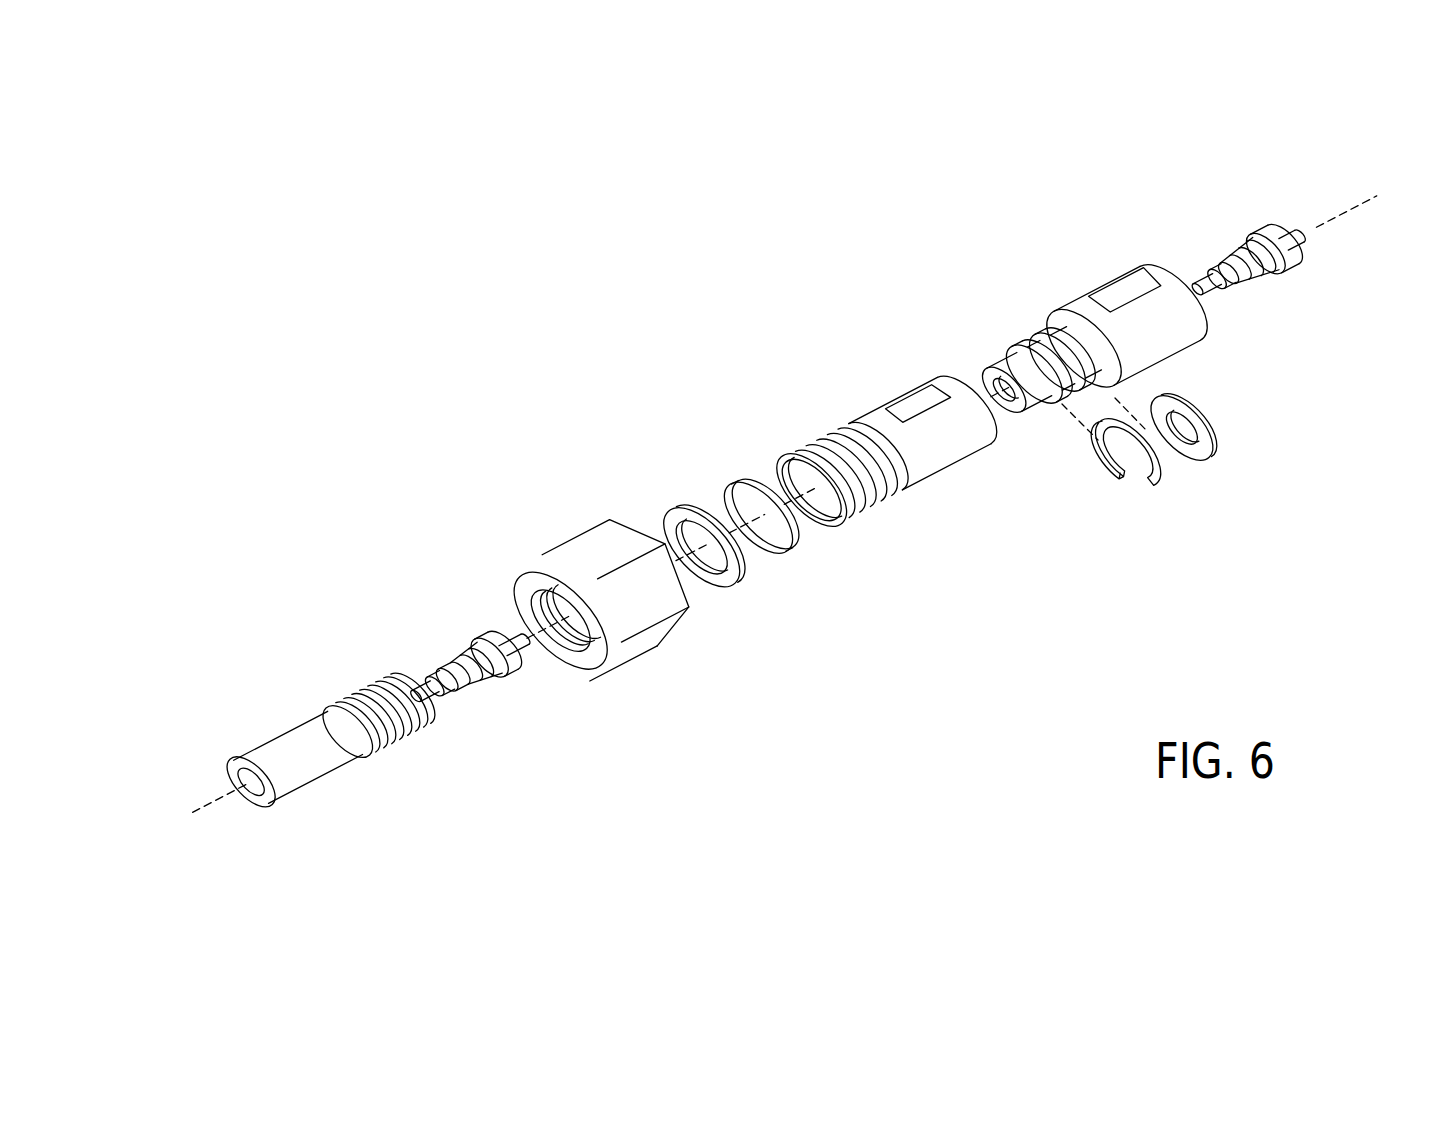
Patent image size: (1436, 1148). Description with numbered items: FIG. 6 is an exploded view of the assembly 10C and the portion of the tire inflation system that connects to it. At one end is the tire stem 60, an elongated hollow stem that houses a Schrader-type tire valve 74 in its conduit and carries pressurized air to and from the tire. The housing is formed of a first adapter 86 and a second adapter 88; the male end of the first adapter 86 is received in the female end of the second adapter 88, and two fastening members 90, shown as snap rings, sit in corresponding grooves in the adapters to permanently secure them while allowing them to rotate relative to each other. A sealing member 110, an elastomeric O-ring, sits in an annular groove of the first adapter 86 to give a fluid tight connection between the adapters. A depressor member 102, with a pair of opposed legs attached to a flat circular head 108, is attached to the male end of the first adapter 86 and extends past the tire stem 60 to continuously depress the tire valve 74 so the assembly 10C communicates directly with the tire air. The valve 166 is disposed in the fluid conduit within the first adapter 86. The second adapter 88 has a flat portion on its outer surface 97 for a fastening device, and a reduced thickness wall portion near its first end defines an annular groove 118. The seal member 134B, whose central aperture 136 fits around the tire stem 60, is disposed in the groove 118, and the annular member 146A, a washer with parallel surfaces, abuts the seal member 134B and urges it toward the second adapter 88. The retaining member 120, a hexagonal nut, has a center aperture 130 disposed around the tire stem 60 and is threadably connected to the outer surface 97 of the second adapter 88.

The assembly 10C is at (382, 414).
The tire stem 60 is at (343, 768).
The tire valve 74 is at (458, 657).
The retaining member 120 is at (614, 617).
The center aperture 130 is at (550, 648).
The annular member 146A is at (730, 588).
The central aperture 136 is at (768, 513).
The seal member 134B is at (780, 540).
The groove 118 is at (891, 460).
The outer surface 97 is at (838, 427).
The second adapter 88 is at (940, 476).
The flat circular head 108 is at (1000, 369).
The depressor member 102 is at (1035, 368).
The first adapter 86 is at (1127, 275).
The valve 166 is at (1257, 230).
The fastening member 90 is at (1160, 474).
The sealing member 110 is at (1207, 407).